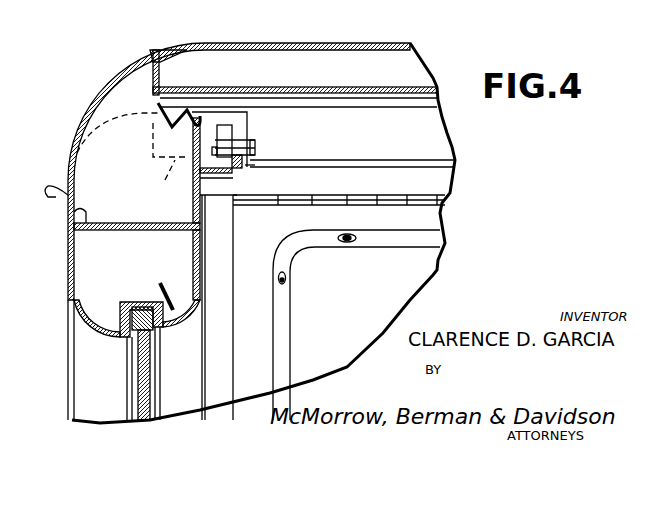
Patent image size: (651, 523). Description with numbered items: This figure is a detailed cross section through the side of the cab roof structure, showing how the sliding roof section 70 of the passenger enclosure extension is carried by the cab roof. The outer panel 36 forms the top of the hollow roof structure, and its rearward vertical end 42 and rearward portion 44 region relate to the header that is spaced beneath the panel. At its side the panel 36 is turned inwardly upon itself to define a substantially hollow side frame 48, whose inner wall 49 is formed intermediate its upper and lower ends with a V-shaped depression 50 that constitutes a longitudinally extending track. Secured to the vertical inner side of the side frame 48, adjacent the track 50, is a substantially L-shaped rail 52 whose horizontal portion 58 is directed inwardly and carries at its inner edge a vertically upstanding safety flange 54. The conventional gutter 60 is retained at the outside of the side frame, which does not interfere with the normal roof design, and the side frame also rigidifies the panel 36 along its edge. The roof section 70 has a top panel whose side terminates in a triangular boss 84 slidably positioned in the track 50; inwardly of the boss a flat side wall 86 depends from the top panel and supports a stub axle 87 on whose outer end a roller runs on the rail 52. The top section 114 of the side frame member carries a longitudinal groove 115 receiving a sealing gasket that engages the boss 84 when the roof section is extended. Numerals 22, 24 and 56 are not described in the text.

The outer shell 22 is at (337, 36).
The outer wall 24 is at (72, 287).
The outer panel 36 is at (388, 44).
The rearward vertical end 42 is at (388, 70).
The portion of the header 44 is at (248, 95).
The side frame 48 is at (140, 195).
The inner wall 49 is at (173, 232).
The V-shaped depression 50 is at (153, 158).
The L-shaped rail 52 is at (212, 130).
The safety flange 54 is at (248, 163).
The door frame 56 is at (208, 200).
The horizontal portion 58 is at (232, 175).
The gutter 60 is at (50, 198).
The roof section 70 is at (310, 105).
The triangular boss 84 is at (157, 117).
The side wall 86 is at (250, 127).
The stub axle 87 is at (257, 147).
The top section 114 is at (113, 117).
The longitudinal groove 115 is at (192, 206).